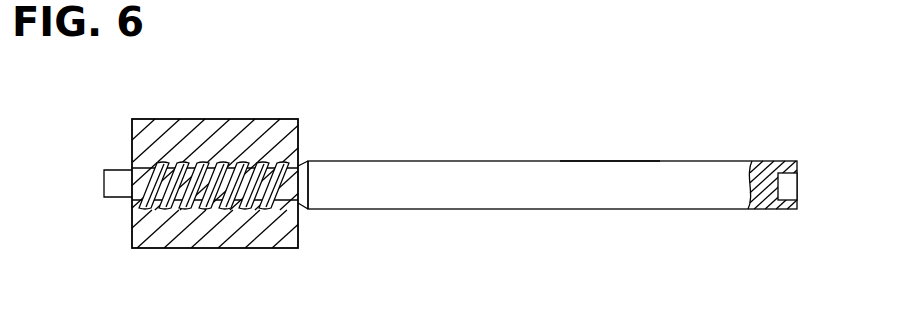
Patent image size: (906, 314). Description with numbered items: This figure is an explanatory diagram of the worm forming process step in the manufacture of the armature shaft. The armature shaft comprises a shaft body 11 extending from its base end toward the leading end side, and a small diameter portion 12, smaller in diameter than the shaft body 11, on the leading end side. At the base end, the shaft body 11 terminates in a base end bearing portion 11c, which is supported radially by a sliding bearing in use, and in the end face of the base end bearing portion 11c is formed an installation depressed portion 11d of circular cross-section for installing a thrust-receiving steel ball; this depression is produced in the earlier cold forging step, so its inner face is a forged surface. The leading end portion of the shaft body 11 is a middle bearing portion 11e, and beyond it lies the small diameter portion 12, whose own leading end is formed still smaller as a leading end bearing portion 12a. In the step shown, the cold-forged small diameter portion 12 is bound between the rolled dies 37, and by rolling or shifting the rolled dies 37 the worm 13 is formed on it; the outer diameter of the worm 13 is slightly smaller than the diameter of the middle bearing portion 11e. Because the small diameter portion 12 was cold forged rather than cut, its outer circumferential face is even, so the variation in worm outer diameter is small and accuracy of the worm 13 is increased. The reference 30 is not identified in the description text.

The rolled dies 37 is at (212, 125).
The worm 13 is at (204, 208).
The small diameter portion 12 is at (279, 202).
The leading end bearing portion 12a is at (119, 192).
The shaft body 11 is at (482, 200).
The middle bearing portion 11e is at (345, 160).
The shaft outer surface (7) 30 is at (617, 154).
The base end bearing portion 11c is at (752, 160).
The installation depressed portion 11d is at (800, 176).